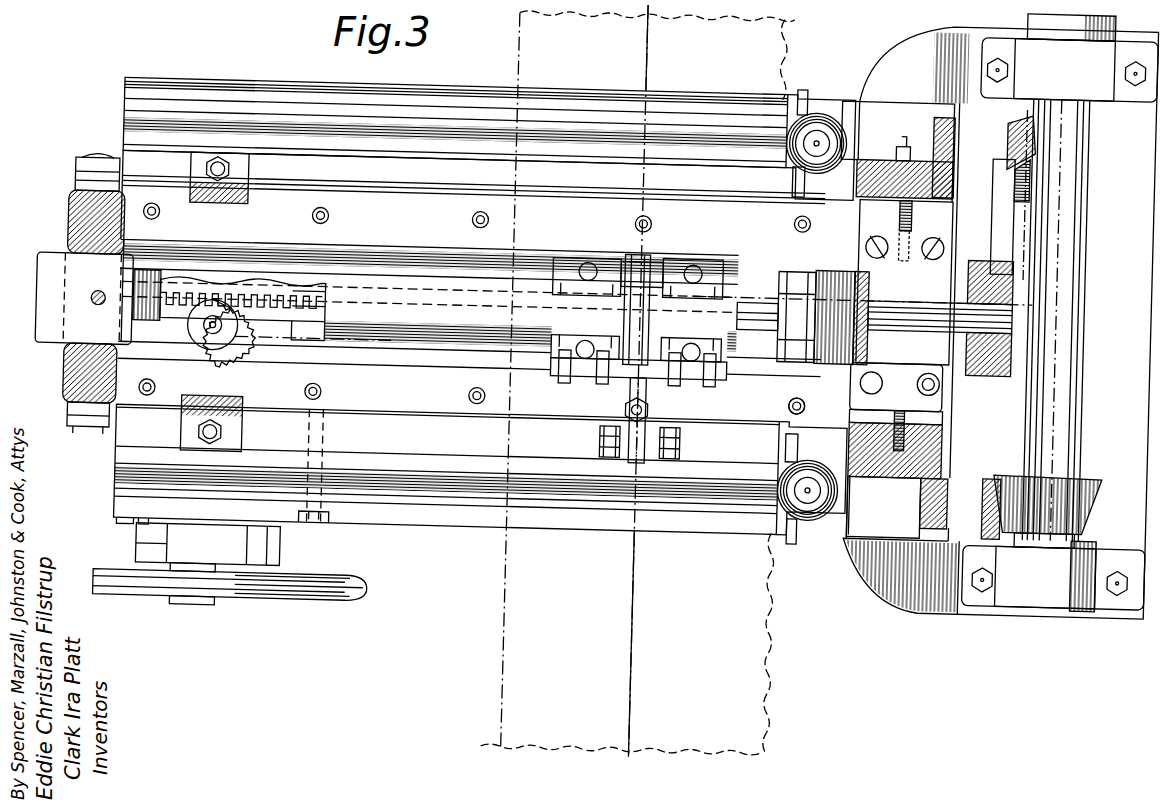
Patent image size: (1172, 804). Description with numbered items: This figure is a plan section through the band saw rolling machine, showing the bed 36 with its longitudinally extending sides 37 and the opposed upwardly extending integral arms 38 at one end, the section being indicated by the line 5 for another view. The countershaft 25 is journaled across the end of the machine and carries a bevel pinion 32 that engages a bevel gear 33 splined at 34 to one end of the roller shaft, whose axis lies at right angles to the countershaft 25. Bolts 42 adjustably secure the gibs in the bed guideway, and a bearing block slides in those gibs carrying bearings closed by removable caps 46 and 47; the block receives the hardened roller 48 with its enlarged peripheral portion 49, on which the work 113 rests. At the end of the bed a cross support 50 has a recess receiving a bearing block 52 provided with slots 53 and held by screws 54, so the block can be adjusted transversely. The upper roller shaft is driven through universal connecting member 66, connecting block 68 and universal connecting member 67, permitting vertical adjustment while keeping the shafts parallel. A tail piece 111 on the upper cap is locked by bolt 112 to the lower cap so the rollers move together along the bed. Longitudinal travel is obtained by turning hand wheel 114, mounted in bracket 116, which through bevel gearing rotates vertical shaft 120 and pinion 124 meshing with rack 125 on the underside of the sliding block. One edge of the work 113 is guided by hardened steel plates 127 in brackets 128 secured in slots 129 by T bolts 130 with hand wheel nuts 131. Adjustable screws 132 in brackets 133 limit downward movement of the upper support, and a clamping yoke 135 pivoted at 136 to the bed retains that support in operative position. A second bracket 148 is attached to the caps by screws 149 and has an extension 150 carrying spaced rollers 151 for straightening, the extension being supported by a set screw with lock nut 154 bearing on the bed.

The section line 5- 5 is at (669, 8).
The countershaft 25 is at (1092, 209).
The bevel pinion 32 is at (1100, 478).
The bevel gear 33 is at (1010, 136).
The spline 34 is at (1015, 312).
The bed 36 is at (556, 91).
The longitudinally extending sides 37 is at (444, 91).
The upwardly extending integral arms 38 is at (875, 160).
The bolts 42 is at (332, 220).
The removable cap 46 is at (718, 258).
The removable cap 47 is at (575, 268).
The roller 48 is at (660, 262).
The enlarged peripheral portion 49 is at (637, 258).
The cross support 50 is at (953, 424).
The bearing block 52 is at (949, 375).
The slots 53 is at (936, 252).
The screws 54 is at (900, 155).
The universal connecting member 66 is at (830, 266).
The universal connecting member 67 is at (806, 395).
The connecting block 68 is at (790, 268).
The tail piece 111 is at (380, 258).
The bolt 112 is at (100, 308).
The work 113 is at (793, 52).
The hand wheel 114 is at (384, 596).
The bracket 116 is at (295, 568).
The vertical shaft 120 is at (221, 342).
The pinion 124 is at (250, 333).
The rack 125 is at (248, 322).
The hardened steel plates 127 is at (806, 92).
The brackets 128 is at (835, 120).
The slots 129 is at (386, 540).
The T bolts 130 is at (796, 176).
The hand wheel nuts 131 is at (822, 116).
The adjustable screws 132 is at (200, 182).
The brackets 133 is at (253, 178).
The clamping yoke 135 is at (85, 438).
The pivot 136 is at (105, 441).
The second bracket 148 is at (736, 375).
The screws 149 is at (585, 264).
The extension 150 is at (660, 404).
The spaced rollers 151 is at (692, 442).
The lock nut 154 is at (636, 412).